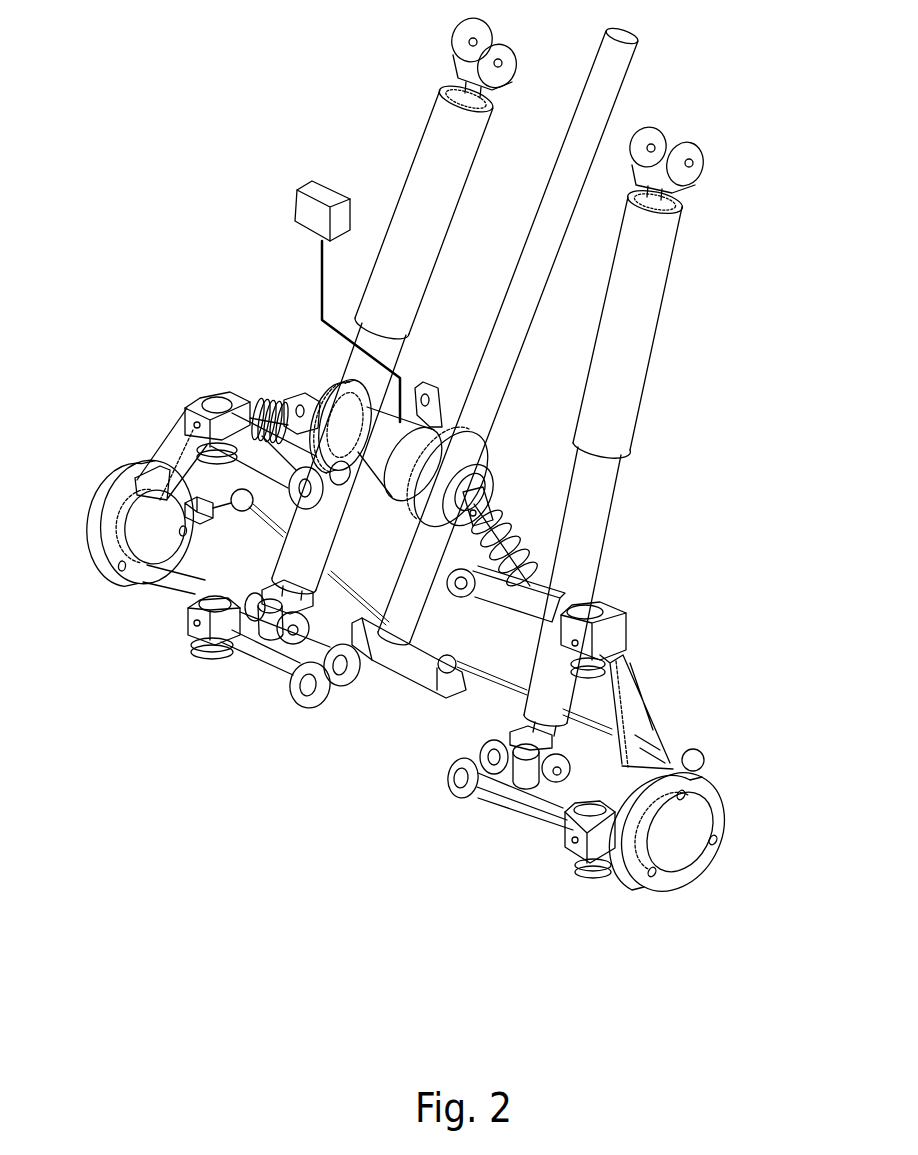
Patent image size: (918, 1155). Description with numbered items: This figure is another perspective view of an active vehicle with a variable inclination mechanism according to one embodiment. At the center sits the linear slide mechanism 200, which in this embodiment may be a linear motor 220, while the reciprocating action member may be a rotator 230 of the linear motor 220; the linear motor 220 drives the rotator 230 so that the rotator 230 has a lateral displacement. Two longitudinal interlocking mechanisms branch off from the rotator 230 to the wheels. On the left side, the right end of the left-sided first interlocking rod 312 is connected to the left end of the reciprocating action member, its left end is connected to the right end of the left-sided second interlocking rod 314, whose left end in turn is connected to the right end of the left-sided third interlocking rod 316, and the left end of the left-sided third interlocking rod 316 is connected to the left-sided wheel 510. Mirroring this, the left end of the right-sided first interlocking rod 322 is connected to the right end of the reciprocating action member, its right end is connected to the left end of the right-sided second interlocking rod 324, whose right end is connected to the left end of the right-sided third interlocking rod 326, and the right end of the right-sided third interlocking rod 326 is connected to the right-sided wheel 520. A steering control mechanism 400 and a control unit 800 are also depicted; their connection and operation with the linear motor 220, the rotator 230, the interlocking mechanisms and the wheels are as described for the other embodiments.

The linear slide mechanism 200 is at (441, 437).
The linear motor 220 is at (372, 485).
The rotator 230 is at (490, 468).
The left-sided first interlocking rod 312 is at (270, 396).
The left-sided second interlocking rod 314 is at (235, 398).
The left-sided third interlocking rod 316 is at (160, 450).
The right-sided first interlocking rod 322 is at (572, 533).
The right-sided second interlocking rod 324 is at (572, 580).
The right-sided third interlocking rod 326 is at (633, 703).
The steering control mechanism 400 is at (622, 66).
The left-sided wheel 510 is at (103, 507).
The right-sided wheel 520 is at (735, 808).
The control unit 800 is at (326, 188).